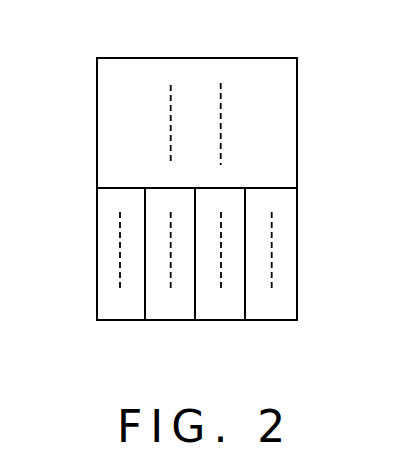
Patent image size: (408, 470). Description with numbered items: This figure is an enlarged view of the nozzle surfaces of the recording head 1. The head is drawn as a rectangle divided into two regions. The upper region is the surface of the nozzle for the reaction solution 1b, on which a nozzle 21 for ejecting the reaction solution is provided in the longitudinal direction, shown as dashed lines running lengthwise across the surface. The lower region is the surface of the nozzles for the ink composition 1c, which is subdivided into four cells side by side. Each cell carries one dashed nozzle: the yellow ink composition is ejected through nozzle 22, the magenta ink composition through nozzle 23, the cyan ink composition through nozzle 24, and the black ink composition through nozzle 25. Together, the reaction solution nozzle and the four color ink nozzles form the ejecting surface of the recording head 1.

The recording head 1 is at (297, 212).
The surface of a nozzle for a reaction solution 1b is at (118, 132).
The surface of nozzles for the ink composition 1c is at (117, 253).
The nozzle for ejecting the reaction solution 21 is at (172, 105).
The nozzle for yellow ink composition 22 is at (122, 273).
The nozzle for magenta ink composition 23 is at (172, 273).
The nozzle for cyan ink composition 24 is at (220, 275).
The nozzle for black ink composition 25 is at (273, 275).